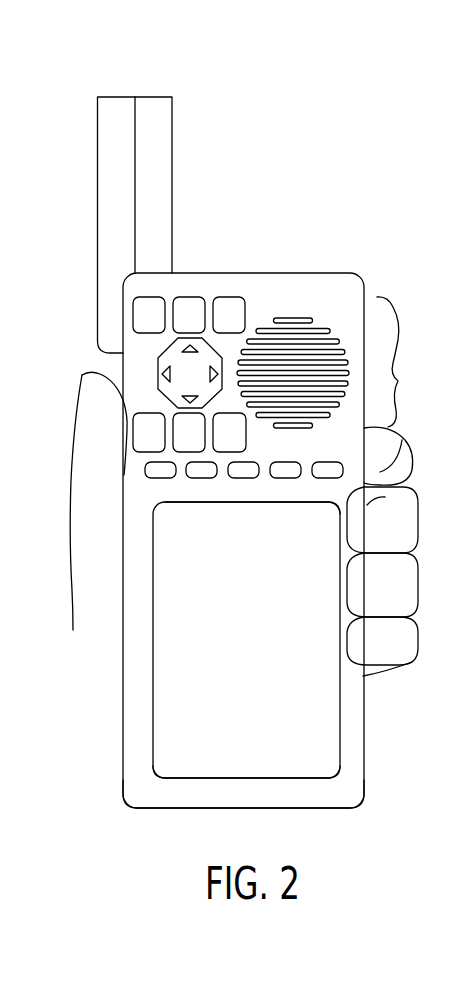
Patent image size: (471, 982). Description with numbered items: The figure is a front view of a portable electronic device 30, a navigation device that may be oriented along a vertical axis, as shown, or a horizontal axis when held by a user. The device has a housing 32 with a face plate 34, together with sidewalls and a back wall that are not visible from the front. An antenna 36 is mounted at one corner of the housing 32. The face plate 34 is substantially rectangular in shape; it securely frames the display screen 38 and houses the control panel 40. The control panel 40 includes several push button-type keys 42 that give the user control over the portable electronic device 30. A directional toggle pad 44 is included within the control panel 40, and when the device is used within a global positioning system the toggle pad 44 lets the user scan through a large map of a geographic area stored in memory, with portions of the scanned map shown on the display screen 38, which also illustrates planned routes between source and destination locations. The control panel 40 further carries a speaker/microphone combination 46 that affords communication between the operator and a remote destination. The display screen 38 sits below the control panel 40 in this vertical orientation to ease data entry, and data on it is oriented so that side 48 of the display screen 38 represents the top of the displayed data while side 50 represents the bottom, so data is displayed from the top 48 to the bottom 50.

The portable electronic device 30 is at (262, 195).
The housing 32 is at (337, 273).
The face plate 34 is at (347, 793).
The antenna 36 is at (157, 170).
The display screen 38 is at (180, 660).
The control panel 40 is at (250, 486).
The push button-type keys 42 is at (230, 307).
The directional toggle pad 44 is at (180, 370).
The speaker/microphone combination 46 is at (303, 322).
The side of the display screen 48 is at (267, 503).
The side of the display screen 50 is at (225, 775).